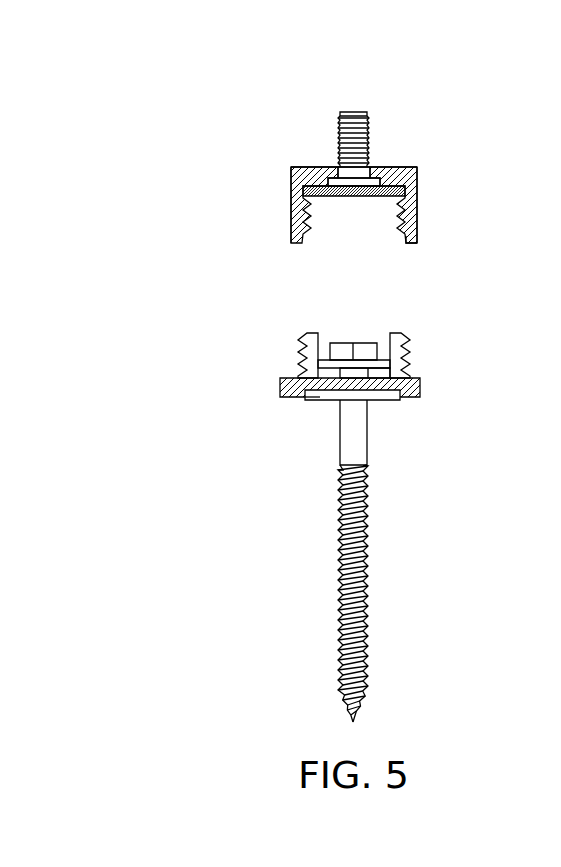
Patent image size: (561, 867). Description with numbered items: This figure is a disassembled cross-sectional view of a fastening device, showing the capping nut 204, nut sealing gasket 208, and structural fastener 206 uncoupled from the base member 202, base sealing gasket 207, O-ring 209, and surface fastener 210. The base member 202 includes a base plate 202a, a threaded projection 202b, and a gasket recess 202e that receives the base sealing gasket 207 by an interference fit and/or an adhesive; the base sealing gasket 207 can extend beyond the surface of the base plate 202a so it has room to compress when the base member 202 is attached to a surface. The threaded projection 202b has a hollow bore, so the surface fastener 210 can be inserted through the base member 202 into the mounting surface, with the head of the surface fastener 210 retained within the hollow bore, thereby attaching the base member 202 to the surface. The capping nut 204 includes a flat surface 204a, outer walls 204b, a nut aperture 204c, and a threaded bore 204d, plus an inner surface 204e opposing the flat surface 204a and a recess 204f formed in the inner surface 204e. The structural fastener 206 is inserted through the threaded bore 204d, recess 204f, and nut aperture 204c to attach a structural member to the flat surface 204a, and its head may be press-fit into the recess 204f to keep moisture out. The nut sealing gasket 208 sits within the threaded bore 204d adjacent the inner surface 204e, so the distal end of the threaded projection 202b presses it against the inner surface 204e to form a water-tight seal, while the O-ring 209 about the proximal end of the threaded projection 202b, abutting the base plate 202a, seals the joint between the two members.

The base member 202 is at (288, 332).
The base plate 202a is at (420, 380).
The threaded projection 202b is at (395, 336).
The gasket recess 202e is at (313, 400).
The capping nut 204 is at (467, 183).
The flat surface 204a is at (407, 166).
The outer walls 204b is at (418, 192).
The nut aperture 204c is at (375, 165).
The threaded bore 204d is at (405, 245).
The inner surface 204e is at (290, 203).
The recess 204f is at (333, 170).
The structural fastener 206 is at (360, 97).
The base sealing gasket 207 is at (386, 400).
The nut sealing gasket 208 is at (329, 198).
The O-ring 209 is at (295, 373).
The surface fastener 210 is at (325, 562).